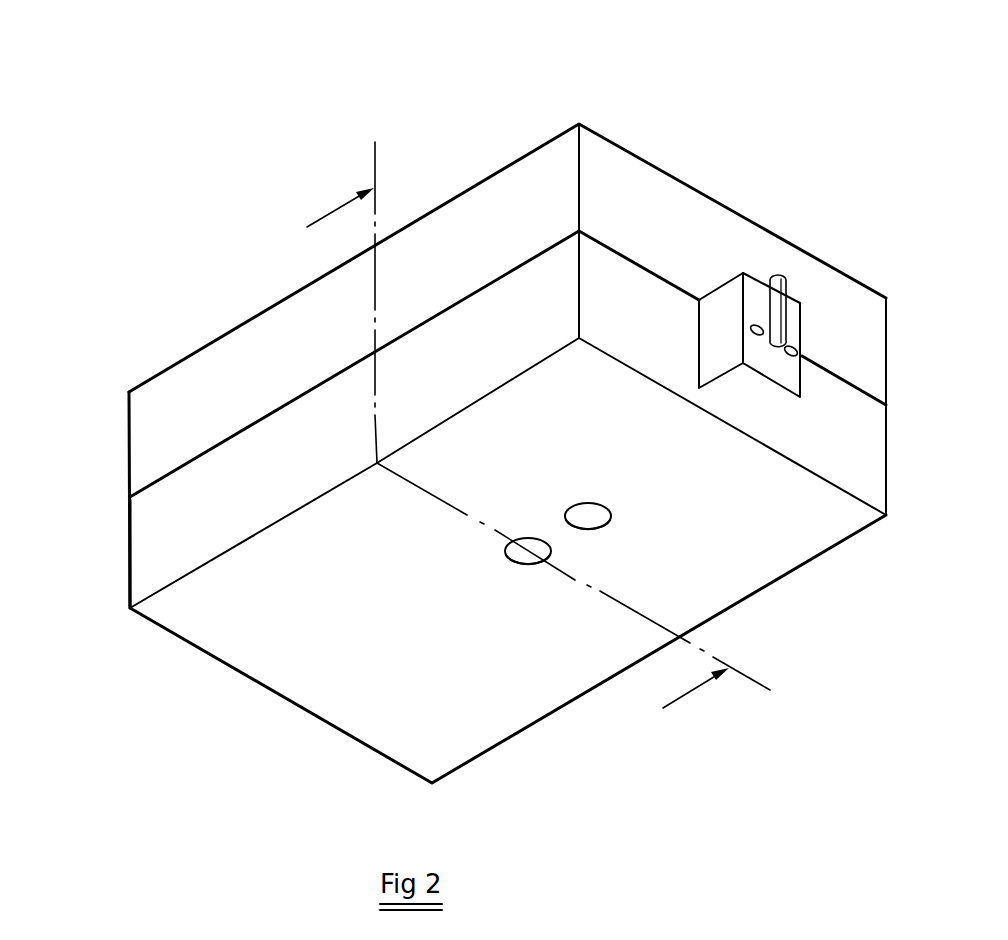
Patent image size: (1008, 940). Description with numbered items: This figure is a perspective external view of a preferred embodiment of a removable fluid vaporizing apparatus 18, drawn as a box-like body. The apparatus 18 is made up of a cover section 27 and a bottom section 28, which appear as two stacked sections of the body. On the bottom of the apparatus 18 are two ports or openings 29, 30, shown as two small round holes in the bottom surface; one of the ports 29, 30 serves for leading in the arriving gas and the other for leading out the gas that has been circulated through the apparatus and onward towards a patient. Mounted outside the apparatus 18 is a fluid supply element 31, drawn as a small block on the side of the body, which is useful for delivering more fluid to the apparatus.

The fluid vaporizing apparatus 18 is at (643, 137).
The cover section 27 is at (207, 370).
The bottom section 28 is at (168, 540).
The port 29 is at (524, 548).
The port 30 is at (588, 515).
The fluid supply element 31 is at (754, 292).